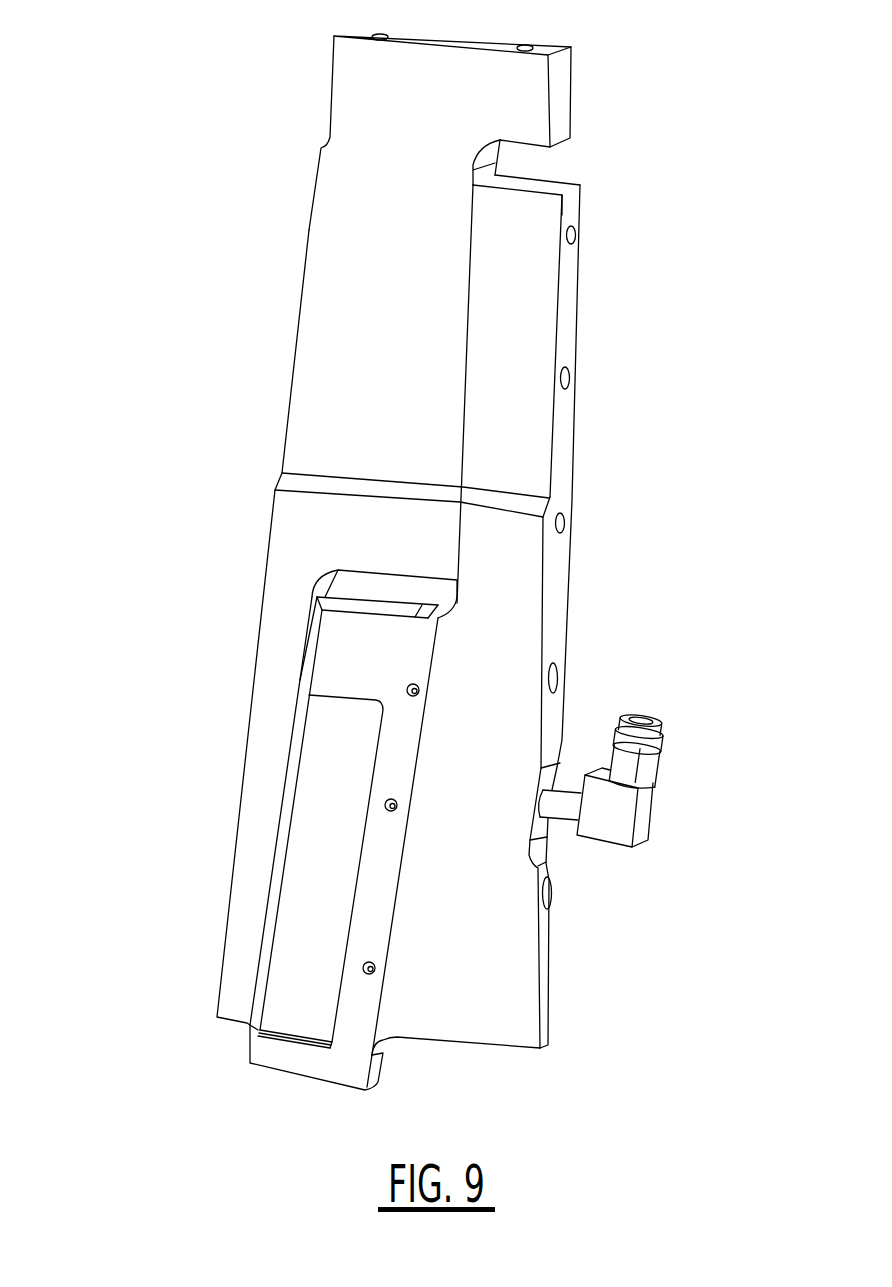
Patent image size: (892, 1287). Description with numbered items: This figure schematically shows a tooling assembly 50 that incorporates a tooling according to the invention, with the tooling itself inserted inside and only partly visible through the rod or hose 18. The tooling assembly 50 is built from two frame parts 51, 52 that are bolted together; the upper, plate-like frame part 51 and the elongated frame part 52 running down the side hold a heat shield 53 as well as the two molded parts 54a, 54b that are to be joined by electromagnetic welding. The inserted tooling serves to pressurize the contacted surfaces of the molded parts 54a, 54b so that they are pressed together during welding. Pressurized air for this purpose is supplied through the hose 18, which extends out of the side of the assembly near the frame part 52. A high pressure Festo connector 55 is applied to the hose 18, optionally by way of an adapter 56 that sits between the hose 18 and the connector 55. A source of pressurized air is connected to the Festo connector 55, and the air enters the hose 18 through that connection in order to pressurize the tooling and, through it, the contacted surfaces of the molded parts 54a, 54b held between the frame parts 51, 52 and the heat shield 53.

The tooling assembly 50 is at (300, 141).
The frame part 51 is at (363, 82).
The frame part 52 is at (537, 292).
The heat shield 53 is at (342, 635).
The molded part 54a is at (302, 678).
The molded part 54b is at (252, 865).
The high pressure Festo connector 55 is at (645, 765).
The adapter 56 is at (610, 822).
The rod or hose 18 is at (562, 812).